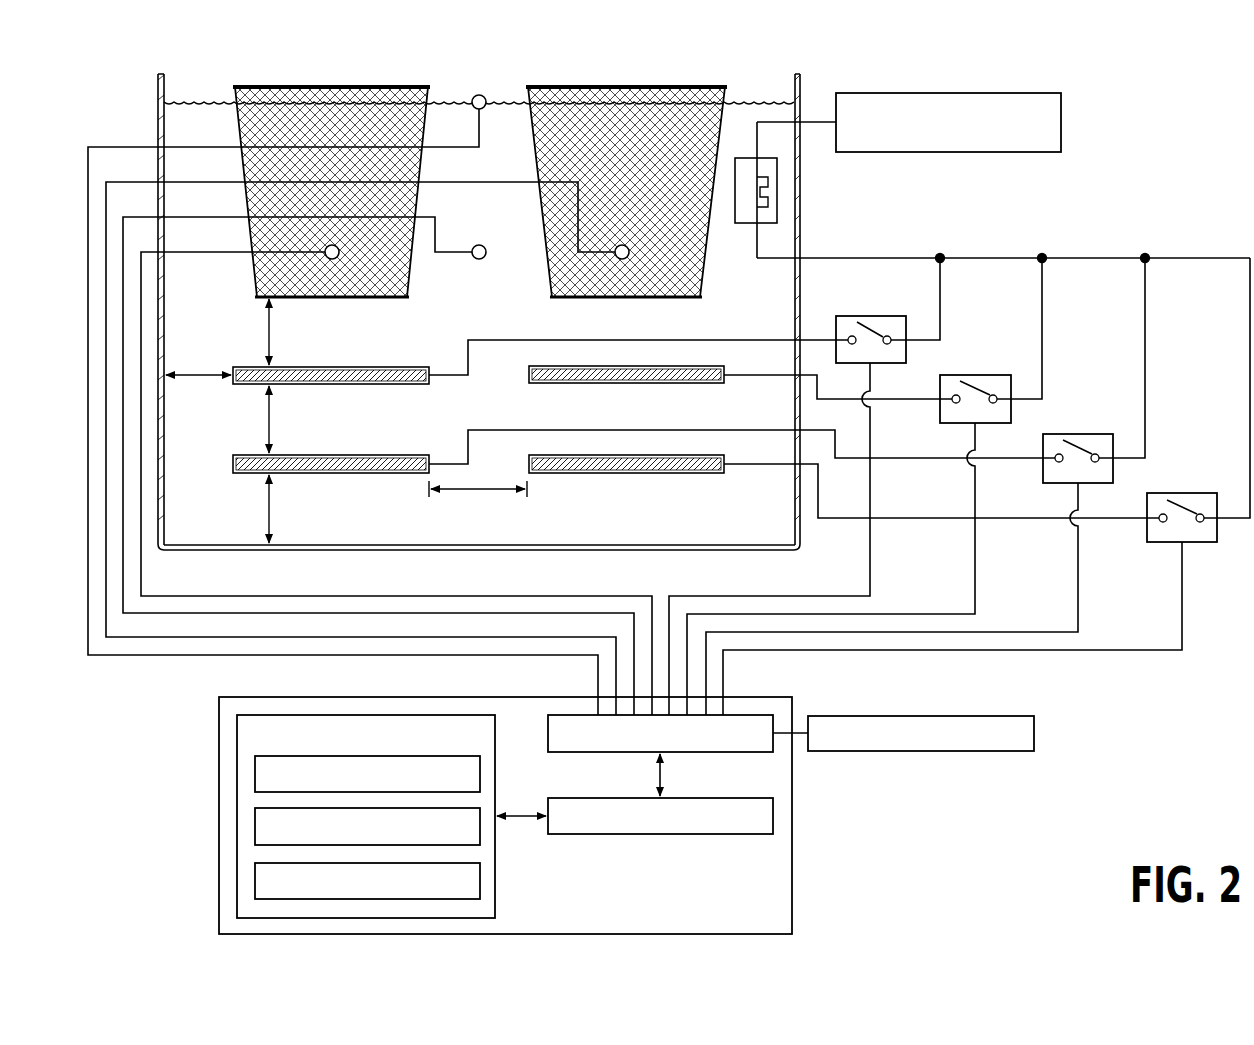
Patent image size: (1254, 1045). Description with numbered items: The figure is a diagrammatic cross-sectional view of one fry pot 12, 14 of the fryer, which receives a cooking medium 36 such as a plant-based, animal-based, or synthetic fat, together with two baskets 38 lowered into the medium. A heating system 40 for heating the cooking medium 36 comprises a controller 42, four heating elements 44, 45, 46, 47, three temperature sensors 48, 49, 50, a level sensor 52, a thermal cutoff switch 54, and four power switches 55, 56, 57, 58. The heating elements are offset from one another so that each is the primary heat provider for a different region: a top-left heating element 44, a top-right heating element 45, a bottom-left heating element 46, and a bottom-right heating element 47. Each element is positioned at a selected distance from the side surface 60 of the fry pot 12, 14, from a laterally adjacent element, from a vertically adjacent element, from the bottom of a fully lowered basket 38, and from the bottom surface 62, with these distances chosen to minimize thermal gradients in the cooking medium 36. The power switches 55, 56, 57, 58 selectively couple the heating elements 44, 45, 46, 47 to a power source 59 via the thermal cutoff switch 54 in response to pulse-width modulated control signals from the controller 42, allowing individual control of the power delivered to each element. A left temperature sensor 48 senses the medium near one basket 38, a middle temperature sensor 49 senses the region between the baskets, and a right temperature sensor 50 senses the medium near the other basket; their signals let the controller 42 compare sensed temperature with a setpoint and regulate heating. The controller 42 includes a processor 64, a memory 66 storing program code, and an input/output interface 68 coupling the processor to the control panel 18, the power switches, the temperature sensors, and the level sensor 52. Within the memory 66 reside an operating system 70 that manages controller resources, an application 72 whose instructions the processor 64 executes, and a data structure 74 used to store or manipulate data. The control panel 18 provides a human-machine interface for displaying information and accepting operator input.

The fry pot 12 is at (156, 100).
The fry pot 14 is at (442, 308).
The control panel 18 is at (985, 752).
The cooking medium 36 is at (192, 100).
The basket 38 is at (265, 86).
The heating system 40 is at (1203, 131).
The controller 42 is at (270, 696).
The top-left heating element 44 is at (385, 367).
The top-right heating element 45 is at (680, 384).
The bottom-left heating element 46 is at (385, 455).
The bottom-right heating element 47 is at (680, 473).
The left temperature sensor 48 is at (340, 258).
The middle temperature sensor 49 is at (479, 245).
The right temperature sensor 50 is at (630, 258).
The level sensor 52 is at (479, 94).
The thermal cutoff switch 54 is at (777, 193).
The power switch 55 is at (880, 316).
The power switch 56 is at (975, 375).
The power switch 57 is at (1080, 434).
The power switch 58 is at (1185, 493).
The power source 59 is at (1020, 93).
The side surface 60 is at (166, 313).
The bottom surface 62 is at (211, 545).
The processor 64 is at (728, 834).
The memory 66 is at (495, 866).
The input/output interface 68 is at (728, 752).
The operating system 70 is at (255, 773).
The application 72 is at (255, 827).
The data structure 74 is at (255, 880).